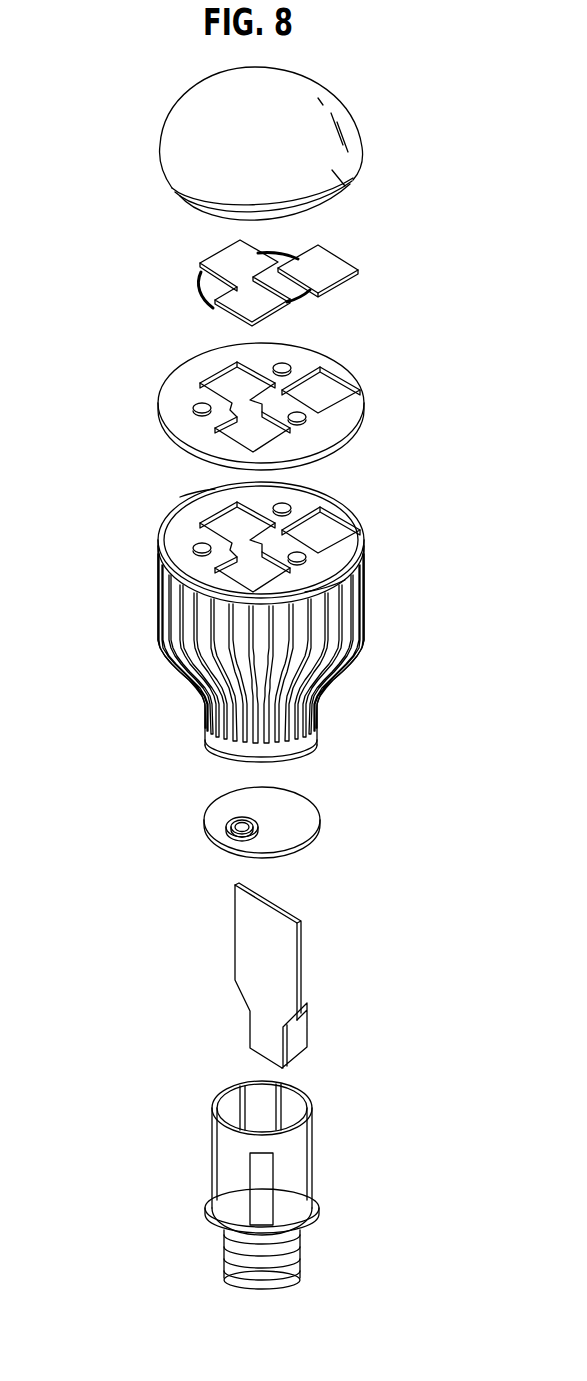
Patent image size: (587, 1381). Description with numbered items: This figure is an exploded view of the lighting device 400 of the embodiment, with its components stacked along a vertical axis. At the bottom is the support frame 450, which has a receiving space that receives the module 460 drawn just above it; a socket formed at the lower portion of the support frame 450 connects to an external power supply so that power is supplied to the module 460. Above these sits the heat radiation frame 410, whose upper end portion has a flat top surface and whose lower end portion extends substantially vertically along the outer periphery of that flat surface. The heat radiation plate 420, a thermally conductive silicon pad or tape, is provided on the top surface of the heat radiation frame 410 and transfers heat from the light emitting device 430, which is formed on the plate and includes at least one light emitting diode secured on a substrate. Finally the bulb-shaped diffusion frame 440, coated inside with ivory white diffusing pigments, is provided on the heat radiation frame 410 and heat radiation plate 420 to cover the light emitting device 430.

The lighting device 400 is at (90, 78).
The heat radiation frame 410 is at (353, 613).
The heat radiation plate 420 is at (345, 428).
The light emitting device 430 is at (327, 276).
The diffusion frame 440 is at (343, 184).
The support frame 450 is at (297, 1172).
The module 460 is at (295, 970).